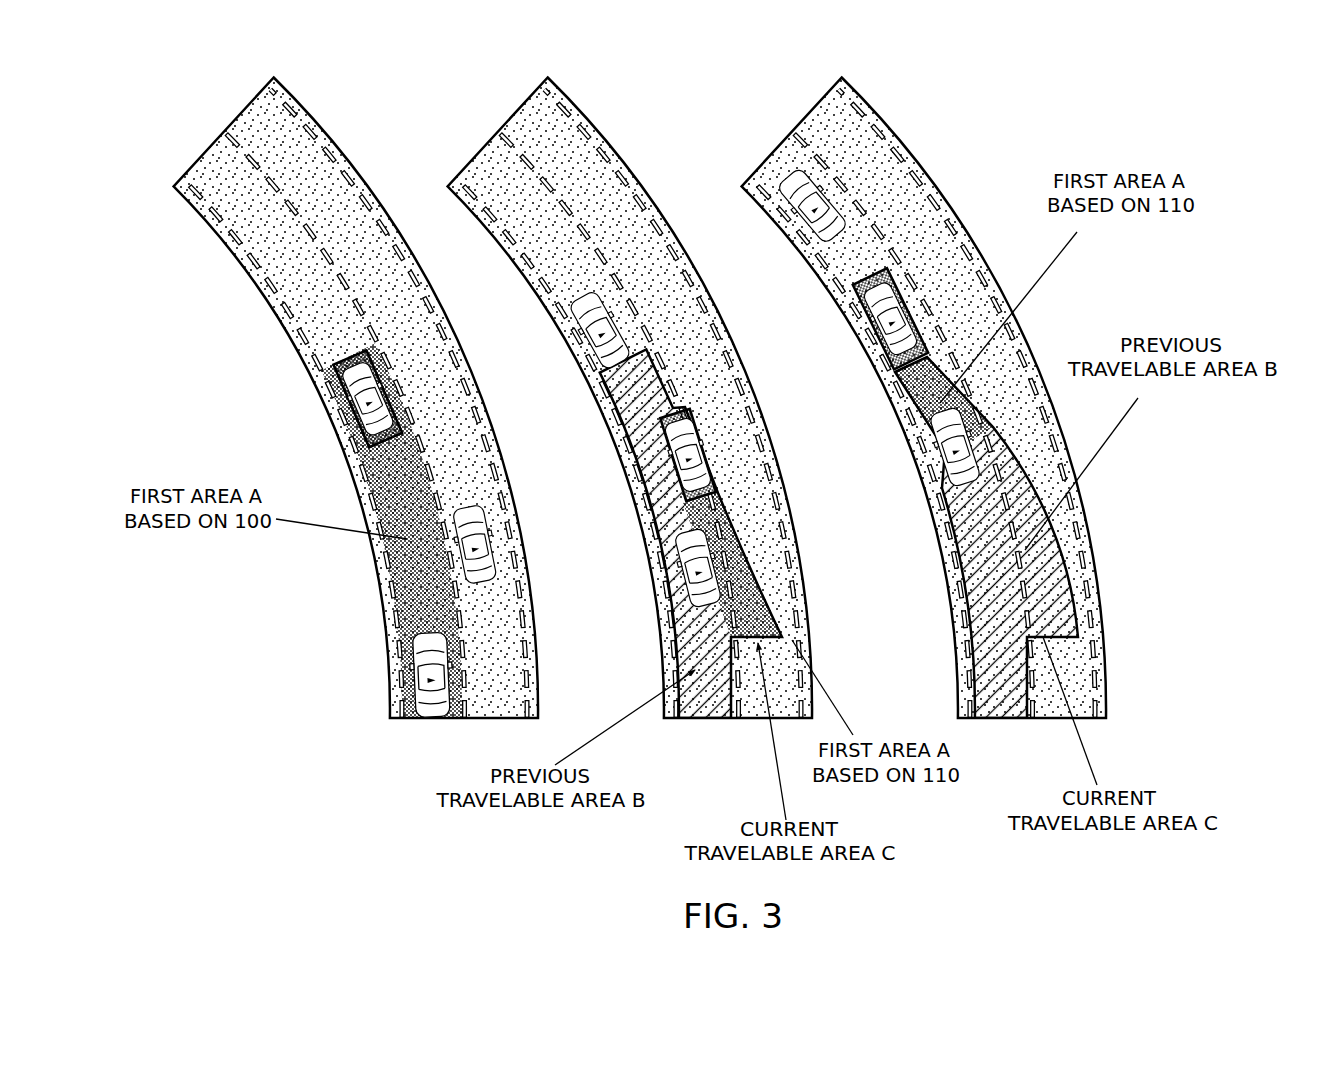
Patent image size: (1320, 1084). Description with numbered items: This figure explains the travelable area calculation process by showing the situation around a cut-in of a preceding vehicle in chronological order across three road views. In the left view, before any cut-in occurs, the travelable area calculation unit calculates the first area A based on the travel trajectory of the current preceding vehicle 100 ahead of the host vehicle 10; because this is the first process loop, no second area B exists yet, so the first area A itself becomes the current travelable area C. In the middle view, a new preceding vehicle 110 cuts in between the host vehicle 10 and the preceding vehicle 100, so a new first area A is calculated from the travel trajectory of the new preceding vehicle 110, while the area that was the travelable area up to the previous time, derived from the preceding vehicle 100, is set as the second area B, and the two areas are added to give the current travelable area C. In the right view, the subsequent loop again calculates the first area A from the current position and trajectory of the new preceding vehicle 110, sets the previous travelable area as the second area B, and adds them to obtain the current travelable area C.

The host vehicle 10 is at (410, 670).
The preceding vehicle 100 is at (340, 407).
The new preceding vehicle 110 is at (690, 460).